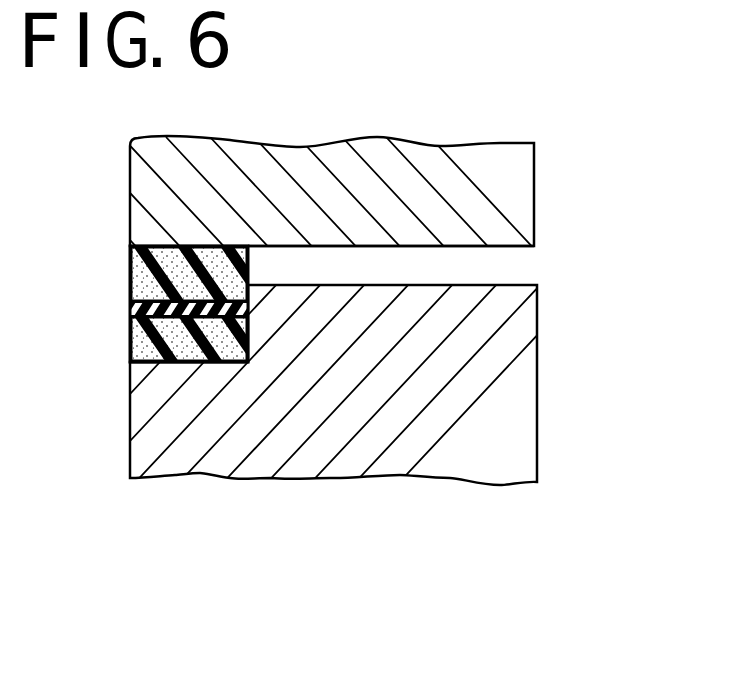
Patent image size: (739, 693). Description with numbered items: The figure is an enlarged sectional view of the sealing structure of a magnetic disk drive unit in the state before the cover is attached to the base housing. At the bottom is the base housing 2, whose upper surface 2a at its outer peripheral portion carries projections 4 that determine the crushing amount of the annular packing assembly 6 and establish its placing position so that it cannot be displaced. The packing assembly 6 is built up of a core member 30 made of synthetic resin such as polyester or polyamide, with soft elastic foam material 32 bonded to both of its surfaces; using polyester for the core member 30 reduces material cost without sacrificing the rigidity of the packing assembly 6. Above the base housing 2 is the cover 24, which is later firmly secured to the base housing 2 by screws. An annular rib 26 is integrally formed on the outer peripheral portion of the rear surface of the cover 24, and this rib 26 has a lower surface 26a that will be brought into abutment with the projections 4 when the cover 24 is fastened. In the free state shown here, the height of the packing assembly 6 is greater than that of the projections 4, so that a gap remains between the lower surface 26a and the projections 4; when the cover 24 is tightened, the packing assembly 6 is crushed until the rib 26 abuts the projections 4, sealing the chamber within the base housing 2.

The base housing 2 is at (293, 452).
The upper surface 2a is at (195, 363).
The projections 4 is at (331, 466).
The packing assembly 6 is at (156, 278).
The cover 24 is at (335, 139).
The annular rib 26 is at (433, 153).
The lower surface 26a is at (493, 247).
The core member 30 is at (130, 305).
The foam material 32 is at (130, 252).